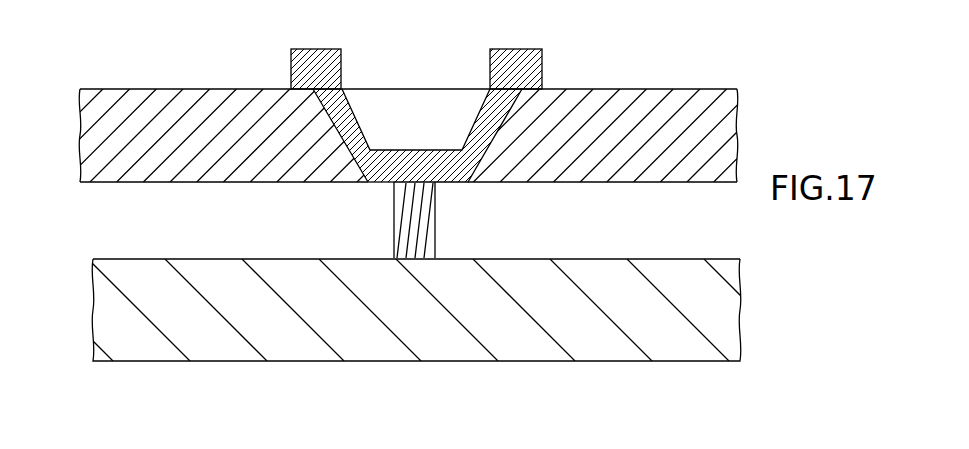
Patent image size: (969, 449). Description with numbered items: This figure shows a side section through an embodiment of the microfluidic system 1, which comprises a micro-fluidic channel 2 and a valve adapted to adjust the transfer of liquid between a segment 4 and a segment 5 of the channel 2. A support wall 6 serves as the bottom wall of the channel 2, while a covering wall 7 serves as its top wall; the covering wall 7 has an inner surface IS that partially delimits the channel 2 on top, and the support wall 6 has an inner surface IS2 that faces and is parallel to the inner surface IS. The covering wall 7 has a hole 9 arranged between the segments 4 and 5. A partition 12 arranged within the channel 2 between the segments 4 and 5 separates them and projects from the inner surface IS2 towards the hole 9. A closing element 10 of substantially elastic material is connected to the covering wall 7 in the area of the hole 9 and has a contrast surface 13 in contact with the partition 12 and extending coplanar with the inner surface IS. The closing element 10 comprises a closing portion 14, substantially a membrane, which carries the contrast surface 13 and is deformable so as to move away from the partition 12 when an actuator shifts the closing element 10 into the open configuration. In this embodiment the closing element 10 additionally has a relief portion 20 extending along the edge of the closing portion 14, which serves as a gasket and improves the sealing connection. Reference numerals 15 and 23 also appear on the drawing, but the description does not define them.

The microfluidic system 1 is at (408, 122).
The micro-fluidic channel 2 is at (250, 170).
The segment 4 is at (408, 313).
The segment 5 is at (650, 194).
The support wall 6 is at (295, 350).
The covering wall 7 is at (666, 108).
The hole 9 is at (444, 114).
The closing element 10 is at (423, 120).
The partition 12 is at (428, 238).
The contrast surface 13 is at (382, 190).
The closing portion 14 is at (455, 183).
The conductive lining layer 15 is at (353, 100).
The relief portion 20 is at (315, 48).
The front face 23 is at (180, 0).
The inner surface IS is at (163, 190).
The inner surface IS2 is at (592, 253).